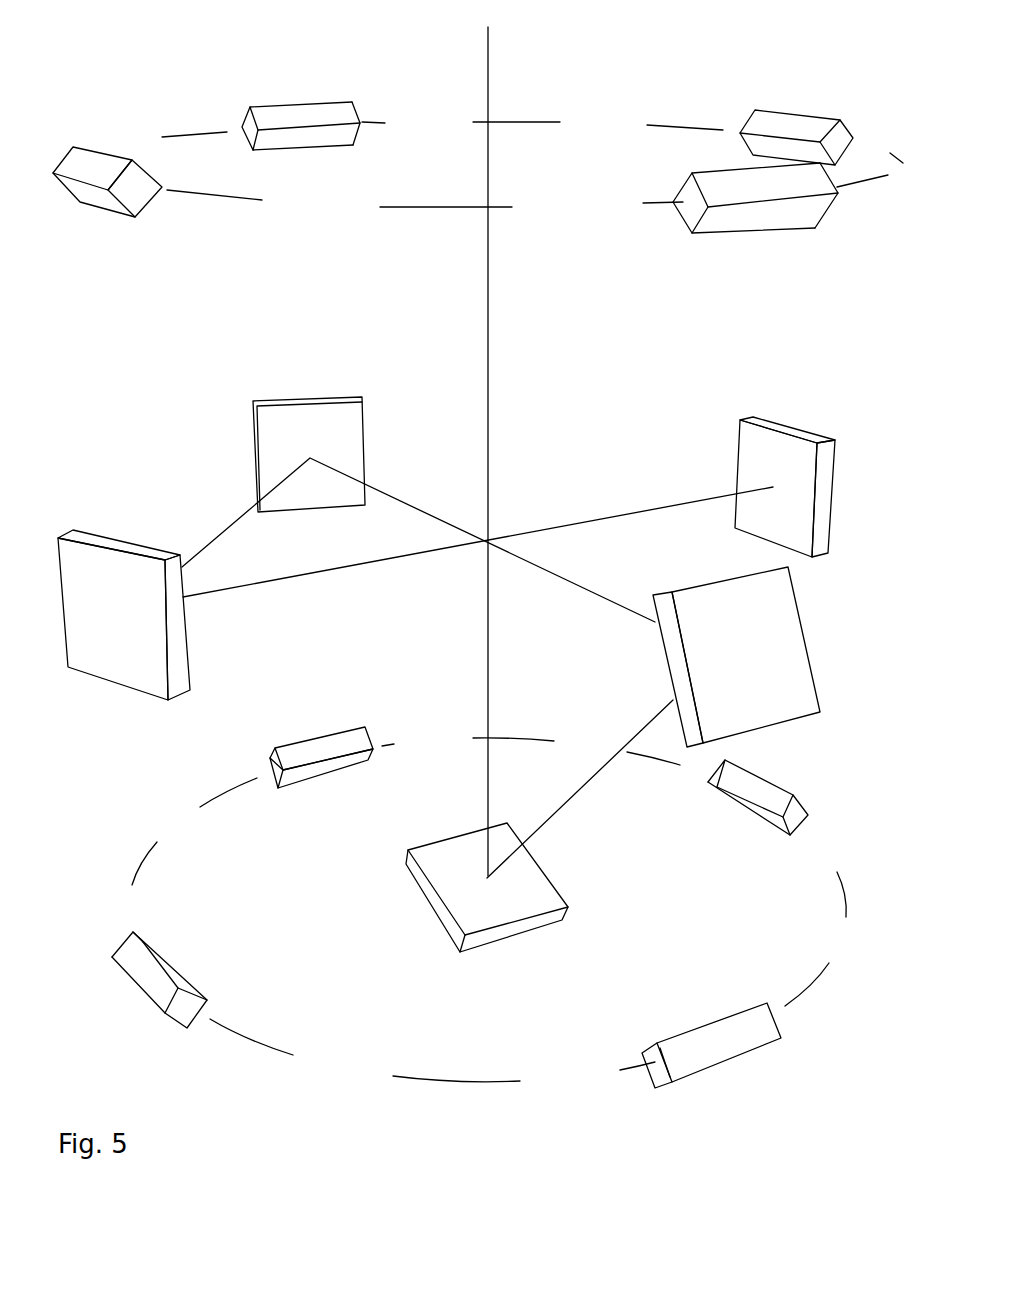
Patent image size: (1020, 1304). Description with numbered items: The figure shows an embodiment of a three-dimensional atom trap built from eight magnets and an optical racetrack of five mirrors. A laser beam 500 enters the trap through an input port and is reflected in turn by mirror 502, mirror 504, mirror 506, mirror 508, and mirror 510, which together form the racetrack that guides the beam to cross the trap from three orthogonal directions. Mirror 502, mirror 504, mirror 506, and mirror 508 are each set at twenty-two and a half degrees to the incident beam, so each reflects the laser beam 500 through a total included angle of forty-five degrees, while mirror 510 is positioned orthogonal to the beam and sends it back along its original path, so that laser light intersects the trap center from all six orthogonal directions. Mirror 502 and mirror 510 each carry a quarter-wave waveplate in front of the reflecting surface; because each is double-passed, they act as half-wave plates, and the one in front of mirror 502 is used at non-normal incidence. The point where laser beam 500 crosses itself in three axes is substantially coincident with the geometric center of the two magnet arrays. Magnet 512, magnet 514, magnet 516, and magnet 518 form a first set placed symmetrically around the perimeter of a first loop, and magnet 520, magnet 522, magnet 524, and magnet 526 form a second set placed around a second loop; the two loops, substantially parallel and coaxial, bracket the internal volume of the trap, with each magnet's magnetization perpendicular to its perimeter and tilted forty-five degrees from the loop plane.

The laser beam 500 is at (497, 83).
The mirror 502 is at (425, 907).
The mirror 504 is at (643, 662).
The mirror 506 is at (313, 385).
The mirror 508 is at (125, 532).
The mirror 510 is at (798, 417).
The magnet 512 is at (95, 142).
The magnet 514 is at (303, 90).
The magnet 516 is at (800, 98).
The magnet 518 is at (702, 257).
The magnet 520 is at (175, 950).
The magnet 522 is at (337, 718).
The magnet 524 is at (748, 812).
The magnet 526 is at (722, 1078).